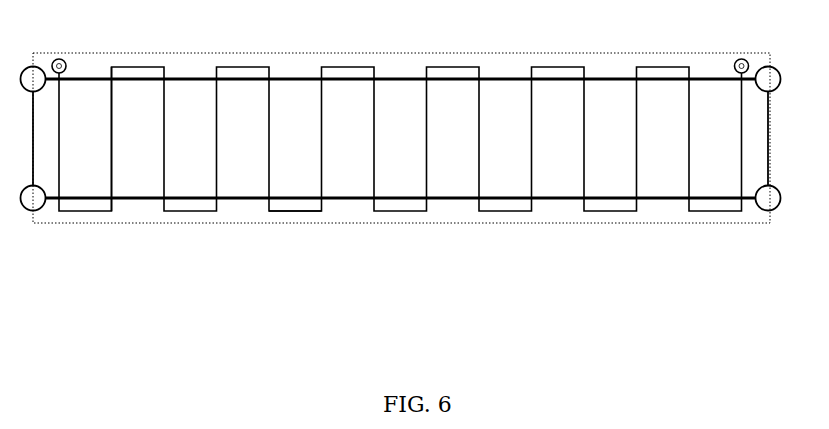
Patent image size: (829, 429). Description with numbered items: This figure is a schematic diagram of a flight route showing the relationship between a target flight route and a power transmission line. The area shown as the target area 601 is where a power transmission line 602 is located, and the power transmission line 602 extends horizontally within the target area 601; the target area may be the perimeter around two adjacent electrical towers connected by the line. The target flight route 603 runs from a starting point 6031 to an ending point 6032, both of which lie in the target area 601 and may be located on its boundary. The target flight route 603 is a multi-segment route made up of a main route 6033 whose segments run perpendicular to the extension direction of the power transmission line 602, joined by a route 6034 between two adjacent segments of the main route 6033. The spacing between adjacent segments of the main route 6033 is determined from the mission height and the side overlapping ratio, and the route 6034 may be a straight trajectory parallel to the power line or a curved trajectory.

The target area 601 is at (178, 97).
The power transmission line 602 is at (400, 80).
The target flight route 603 is at (216, 212).
The starting point 6031 is at (57, 57).
The ending point 6032 is at (743, 57).
The main route 6033 is at (117, 165).
The route between two adjacent segments of the main route 6034 is at (308, 212).